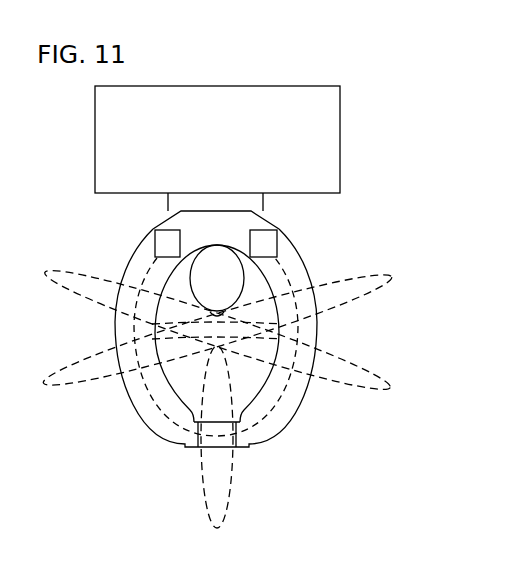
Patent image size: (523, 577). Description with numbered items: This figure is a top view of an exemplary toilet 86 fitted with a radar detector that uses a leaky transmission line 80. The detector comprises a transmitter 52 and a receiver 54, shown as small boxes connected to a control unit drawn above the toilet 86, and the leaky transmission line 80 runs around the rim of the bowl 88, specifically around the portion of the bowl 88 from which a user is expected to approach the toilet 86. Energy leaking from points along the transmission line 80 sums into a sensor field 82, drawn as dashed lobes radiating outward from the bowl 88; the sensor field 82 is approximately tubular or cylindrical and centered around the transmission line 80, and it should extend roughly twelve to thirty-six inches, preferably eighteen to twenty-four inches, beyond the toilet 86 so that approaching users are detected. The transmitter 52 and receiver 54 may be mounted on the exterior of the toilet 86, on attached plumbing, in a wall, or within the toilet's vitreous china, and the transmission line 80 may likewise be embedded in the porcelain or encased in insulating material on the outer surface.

The toilet 86 is at (250, 86).
The transmitter 52 is at (155, 241).
The receiver 54 is at (277, 236).
The leaky transmission line 80 is at (267, 415).
The bowl 88 is at (273, 332).
The sensor field 82 is at (351, 390).